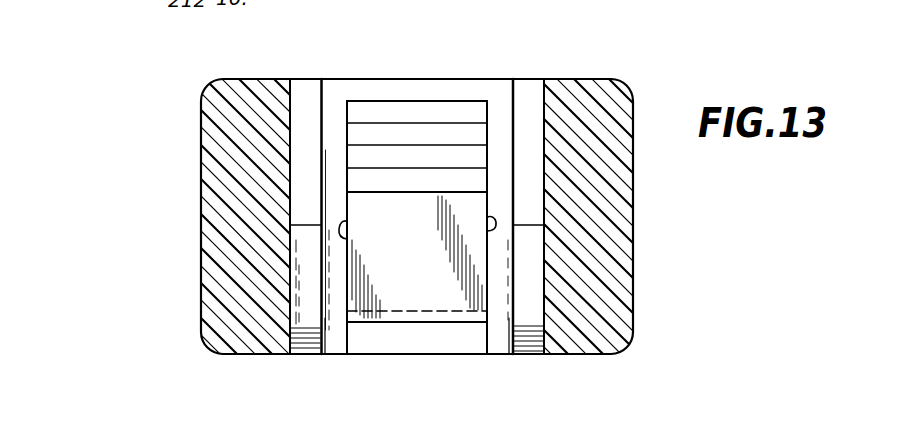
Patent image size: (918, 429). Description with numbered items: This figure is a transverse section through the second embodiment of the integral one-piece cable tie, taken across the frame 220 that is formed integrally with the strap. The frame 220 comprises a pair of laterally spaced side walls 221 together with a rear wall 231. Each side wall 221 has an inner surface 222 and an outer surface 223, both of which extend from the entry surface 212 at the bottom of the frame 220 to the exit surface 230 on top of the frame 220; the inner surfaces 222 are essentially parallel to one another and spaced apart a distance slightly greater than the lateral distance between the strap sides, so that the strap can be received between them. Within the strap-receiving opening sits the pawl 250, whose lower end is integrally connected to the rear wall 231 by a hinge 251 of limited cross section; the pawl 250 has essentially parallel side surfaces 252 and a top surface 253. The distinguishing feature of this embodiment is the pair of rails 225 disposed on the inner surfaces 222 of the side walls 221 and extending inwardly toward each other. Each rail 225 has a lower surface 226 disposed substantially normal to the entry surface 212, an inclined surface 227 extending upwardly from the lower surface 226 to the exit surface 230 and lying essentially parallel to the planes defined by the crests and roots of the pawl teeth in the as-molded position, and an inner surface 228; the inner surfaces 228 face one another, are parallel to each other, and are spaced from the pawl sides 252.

The entry surface 212 is at (248, 356).
The frame 220 is at (205, 90).
The side walls 221 is at (240, 185).
The inner surfaces 222 is at (290, 102).
The outer surface 223 is at (207, 261).
The rails 225 is at (306, 112).
The lower surface 226 is at (308, 323).
The inclined surface 227 is at (307, 148).
The inner surfaces 228 is at (324, 306).
The exit surface 230 is at (262, 79).
The rear wall 231 is at (358, 79).
The pawl 250 is at (388, 104).
The hinge 251 is at (412, 313).
The pawl sides 252 is at (487, 231).
The top surface 253 is at (449, 101).